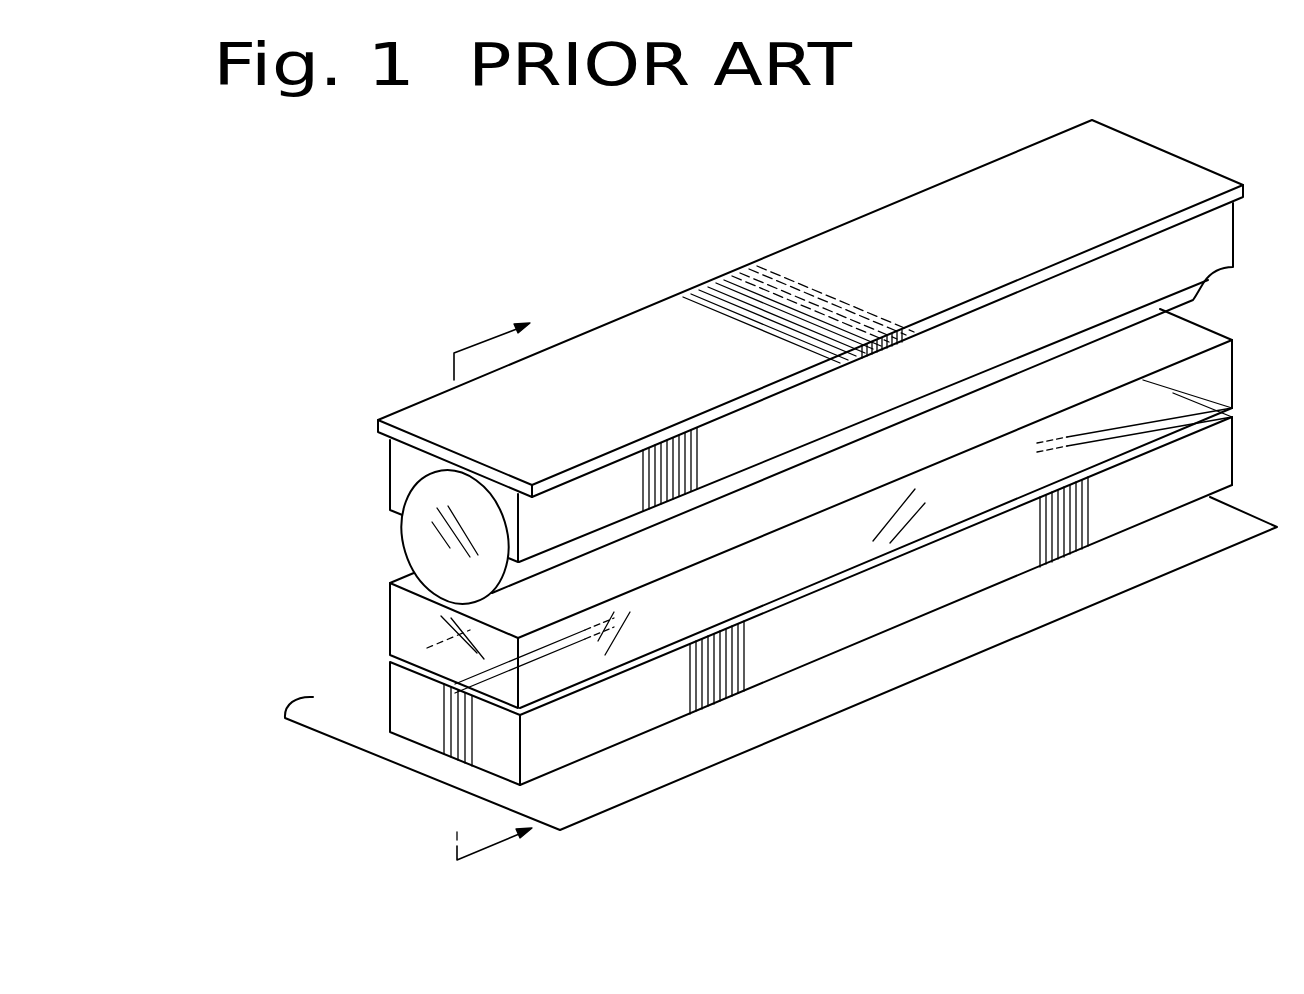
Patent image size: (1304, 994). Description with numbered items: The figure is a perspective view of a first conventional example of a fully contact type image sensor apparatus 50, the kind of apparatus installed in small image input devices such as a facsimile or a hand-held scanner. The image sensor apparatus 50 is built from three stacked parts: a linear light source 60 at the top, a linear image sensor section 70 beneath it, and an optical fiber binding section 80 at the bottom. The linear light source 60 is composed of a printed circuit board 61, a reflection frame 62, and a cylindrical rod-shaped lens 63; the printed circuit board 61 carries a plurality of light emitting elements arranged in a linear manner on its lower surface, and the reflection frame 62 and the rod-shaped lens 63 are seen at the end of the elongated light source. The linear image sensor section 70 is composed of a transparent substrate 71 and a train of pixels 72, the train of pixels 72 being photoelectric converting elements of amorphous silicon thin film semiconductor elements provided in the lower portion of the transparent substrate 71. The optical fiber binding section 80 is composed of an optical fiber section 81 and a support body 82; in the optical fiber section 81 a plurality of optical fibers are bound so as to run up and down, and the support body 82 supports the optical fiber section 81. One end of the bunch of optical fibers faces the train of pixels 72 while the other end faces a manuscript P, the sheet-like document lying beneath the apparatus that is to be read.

The fully contact type image sensor apparatus 50 is at (1302, 787).
The linear light source 60 is at (302, 385).
The printed circuit board 61 is at (806, 254).
The reflection frame 62 is at (398, 463).
The cylindrical rod-shaped lens 63 is at (415, 525).
The linear image sensor section 70 is at (302, 578).
The transparent substrate 71 is at (416, 641).
The train of pixels 72 is at (1120, 418).
The optical fiber binding section 80 is at (285, 653).
The optical fiber section 81 is at (445, 716).
The support body 82 is at (412, 702).
The manuscript P is at (678, 760).